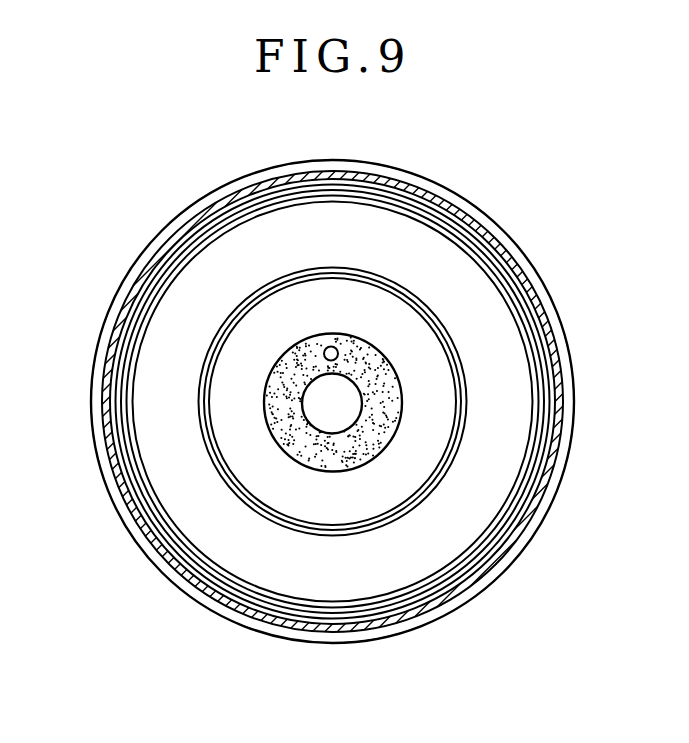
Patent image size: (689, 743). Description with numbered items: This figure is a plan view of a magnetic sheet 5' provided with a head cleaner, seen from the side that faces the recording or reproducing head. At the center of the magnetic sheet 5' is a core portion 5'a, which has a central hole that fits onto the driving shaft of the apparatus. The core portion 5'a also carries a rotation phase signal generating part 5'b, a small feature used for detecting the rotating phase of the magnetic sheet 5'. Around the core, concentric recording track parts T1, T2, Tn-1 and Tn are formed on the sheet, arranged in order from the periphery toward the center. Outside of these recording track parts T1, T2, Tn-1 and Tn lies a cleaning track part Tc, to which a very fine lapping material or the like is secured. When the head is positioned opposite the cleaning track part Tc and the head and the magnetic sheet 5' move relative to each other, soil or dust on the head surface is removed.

The cleaning track part Tc is at (341, 172).
The recording track part T1 is at (173, 265).
The recording track part T2 is at (152, 307).
The recording track part Tn-1 is at (200, 370).
The recording track part Tn is at (205, 413).
The magnetic sheet 5' is at (350, 401).
The core portion 5'a is at (363, 439).
The rotation phase signal generating part 5'b is at (359, 332).